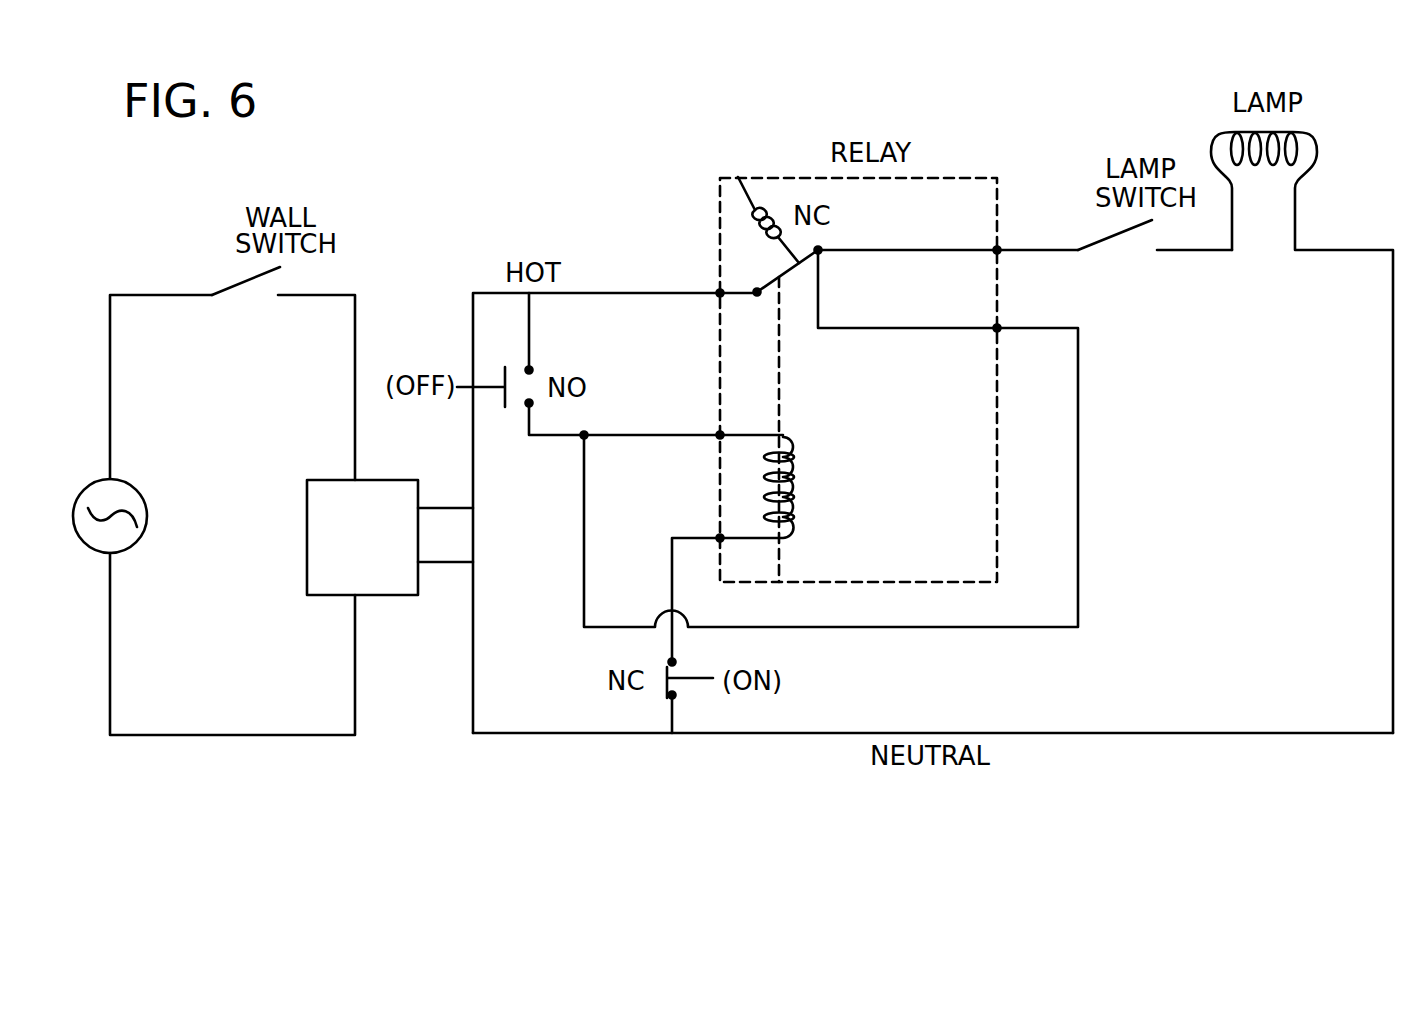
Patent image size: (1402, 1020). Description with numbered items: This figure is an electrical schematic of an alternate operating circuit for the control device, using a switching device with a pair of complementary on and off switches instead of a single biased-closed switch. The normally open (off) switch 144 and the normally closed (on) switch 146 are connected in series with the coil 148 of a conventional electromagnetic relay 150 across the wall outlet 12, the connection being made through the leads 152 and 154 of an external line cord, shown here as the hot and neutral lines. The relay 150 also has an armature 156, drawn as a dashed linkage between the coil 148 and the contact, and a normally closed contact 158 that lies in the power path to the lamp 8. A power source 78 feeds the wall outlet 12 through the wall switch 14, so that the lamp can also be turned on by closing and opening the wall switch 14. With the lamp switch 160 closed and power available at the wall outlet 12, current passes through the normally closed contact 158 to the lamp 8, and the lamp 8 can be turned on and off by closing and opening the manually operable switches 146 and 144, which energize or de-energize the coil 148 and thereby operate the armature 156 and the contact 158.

The lamp 8 is at (1320, 145).
The wall outlet 12 is at (330, 478).
The wall switch 14 is at (237, 282).
The AC power source 78 is at (125, 548).
The normally open (off) switch 144 is at (518, 362).
The normally closed (on) switch 146 is at (660, 660).
The coil 148 is at (798, 480).
The electromagnetic relay 150 is at (998, 291).
The lead 152 is at (643, 292).
The lead 154 is at (567, 735).
The armature 156 is at (780, 388).
The normally closed contact 158 is at (822, 258).
The lamp switch 160 is at (1117, 235).